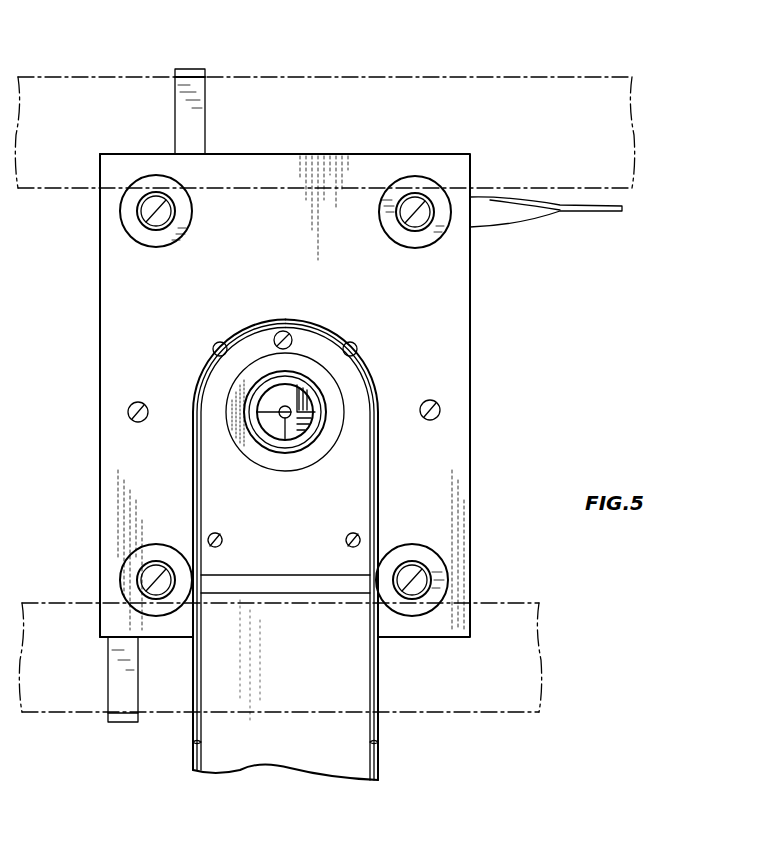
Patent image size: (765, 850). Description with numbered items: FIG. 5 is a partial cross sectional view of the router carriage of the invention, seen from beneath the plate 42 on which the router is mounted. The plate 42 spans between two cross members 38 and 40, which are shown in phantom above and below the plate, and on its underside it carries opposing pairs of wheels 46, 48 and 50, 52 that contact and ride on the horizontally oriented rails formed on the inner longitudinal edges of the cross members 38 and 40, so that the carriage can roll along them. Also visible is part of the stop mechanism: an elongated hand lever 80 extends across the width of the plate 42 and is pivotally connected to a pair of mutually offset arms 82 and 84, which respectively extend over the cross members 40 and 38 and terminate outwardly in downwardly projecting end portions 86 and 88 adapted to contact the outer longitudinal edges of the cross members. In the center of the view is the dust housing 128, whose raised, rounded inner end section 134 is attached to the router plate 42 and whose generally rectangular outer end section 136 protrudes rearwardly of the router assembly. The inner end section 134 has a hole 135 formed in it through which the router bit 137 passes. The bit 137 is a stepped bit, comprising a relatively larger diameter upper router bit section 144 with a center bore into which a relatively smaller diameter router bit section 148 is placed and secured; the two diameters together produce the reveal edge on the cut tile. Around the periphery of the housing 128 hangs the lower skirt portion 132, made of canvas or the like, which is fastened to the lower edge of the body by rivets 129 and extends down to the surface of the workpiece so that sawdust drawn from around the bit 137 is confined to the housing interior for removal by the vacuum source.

The cross member 38 is at (480, 700).
The cross member 40 is at (545, 77).
The plate 42 is at (452, 337).
The wheel 46 is at (188, 575).
The wheel 48 is at (388, 568).
The wheel 50 is at (152, 238).
The mounting screw 52 is at (411, 240).
The hand lever 80 is at (518, 213).
The arm 82 is at (200, 120).
The arm 84 is at (130, 676).
The downwardly projecting end portion 86 is at (195, 72).
The downwardly projecting end portion 88 is at (113, 720).
The housing 128 is at (378, 500).
The rivet 129 is at (382, 742).
The skirt portion 132 is at (205, 680).
The inner end section 134 is at (218, 475).
The hole 135 is at (283, 471).
The outer end section 136 is at (353, 690).
The router bit 137 is at (262, 372).
The upper router bit section 144 is at (310, 393).
The router bit section 148 is at (290, 416).